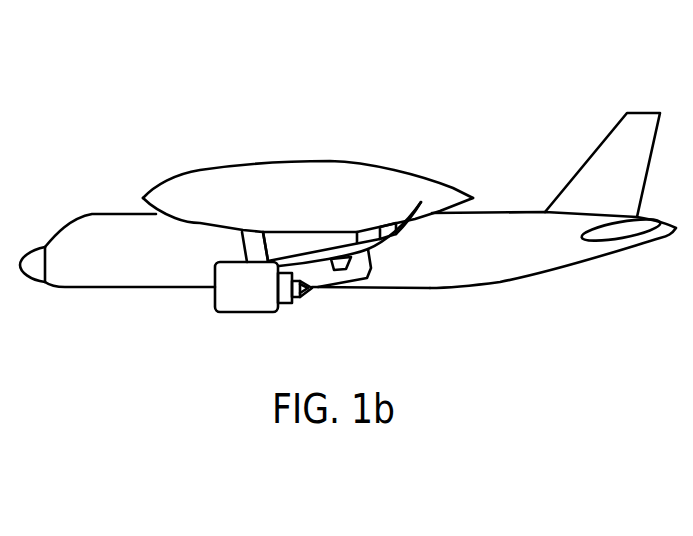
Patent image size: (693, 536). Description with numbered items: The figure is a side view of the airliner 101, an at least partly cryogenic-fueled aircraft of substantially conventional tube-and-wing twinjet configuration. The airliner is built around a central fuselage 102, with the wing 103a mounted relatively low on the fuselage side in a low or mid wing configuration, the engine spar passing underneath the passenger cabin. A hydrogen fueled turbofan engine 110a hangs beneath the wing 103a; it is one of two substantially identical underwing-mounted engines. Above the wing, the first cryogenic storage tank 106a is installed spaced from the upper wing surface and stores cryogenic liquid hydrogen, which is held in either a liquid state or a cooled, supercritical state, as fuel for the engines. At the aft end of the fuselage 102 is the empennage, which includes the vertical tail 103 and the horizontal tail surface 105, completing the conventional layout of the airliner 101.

The airliner 101 is at (166, 141).
The central fuselage 102 is at (490, 289).
The vertical tail 103 is at (633, 137).
The wing 103a is at (323, 257).
The horizontal tail surface 105 is at (610, 228).
The first cryogenic storage tank 106a is at (333, 162).
The first hydrogen fueled turbofan engine 110a is at (212, 303).